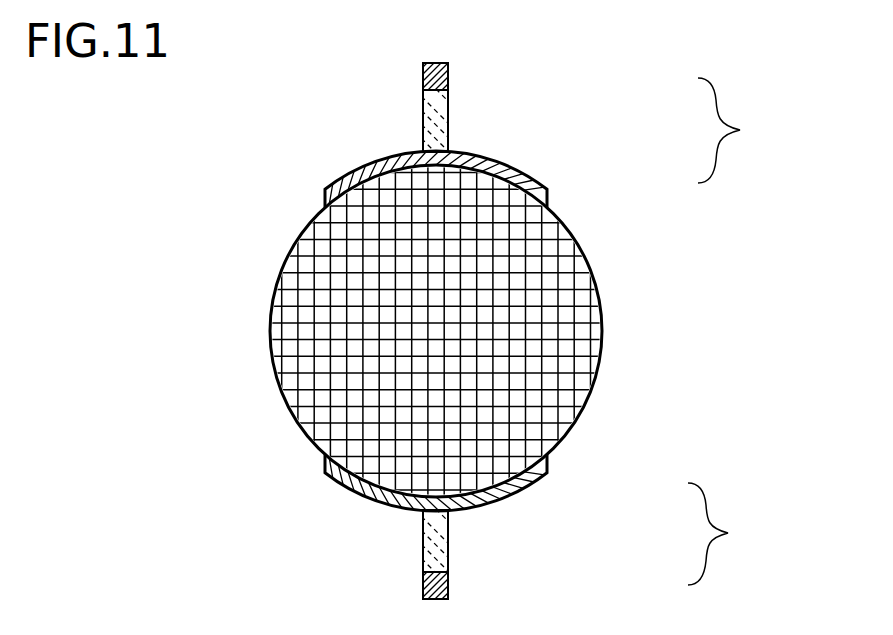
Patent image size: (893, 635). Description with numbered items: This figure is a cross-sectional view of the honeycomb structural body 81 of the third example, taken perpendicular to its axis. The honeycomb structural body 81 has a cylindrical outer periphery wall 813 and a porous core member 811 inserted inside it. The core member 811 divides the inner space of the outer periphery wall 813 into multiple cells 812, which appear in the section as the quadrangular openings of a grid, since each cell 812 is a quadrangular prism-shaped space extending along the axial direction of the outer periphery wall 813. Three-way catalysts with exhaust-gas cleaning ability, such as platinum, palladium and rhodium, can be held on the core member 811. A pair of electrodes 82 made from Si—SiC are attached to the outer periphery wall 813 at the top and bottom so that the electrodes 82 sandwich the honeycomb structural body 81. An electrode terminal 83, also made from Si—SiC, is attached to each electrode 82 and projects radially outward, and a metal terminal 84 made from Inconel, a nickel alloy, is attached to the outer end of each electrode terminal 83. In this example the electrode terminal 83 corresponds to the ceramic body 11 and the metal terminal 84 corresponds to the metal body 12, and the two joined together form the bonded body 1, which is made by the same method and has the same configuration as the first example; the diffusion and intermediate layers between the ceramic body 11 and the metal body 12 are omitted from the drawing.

The bonded body 1 is at (726, 331).
The ceramic body 11 is at (435, 118).
The metal body 12 is at (433, 67).
The honeycomb structural body 81 is at (463, 331).
The core member 811 is at (327, 350).
The cells 812 is at (338, 285).
The outer periphery wall 813 is at (602, 347).
The electrodes 82 is at (372, 170).
The electrode terminal 83 is at (545, 330).
The metal terminal 84 is at (537, 331).